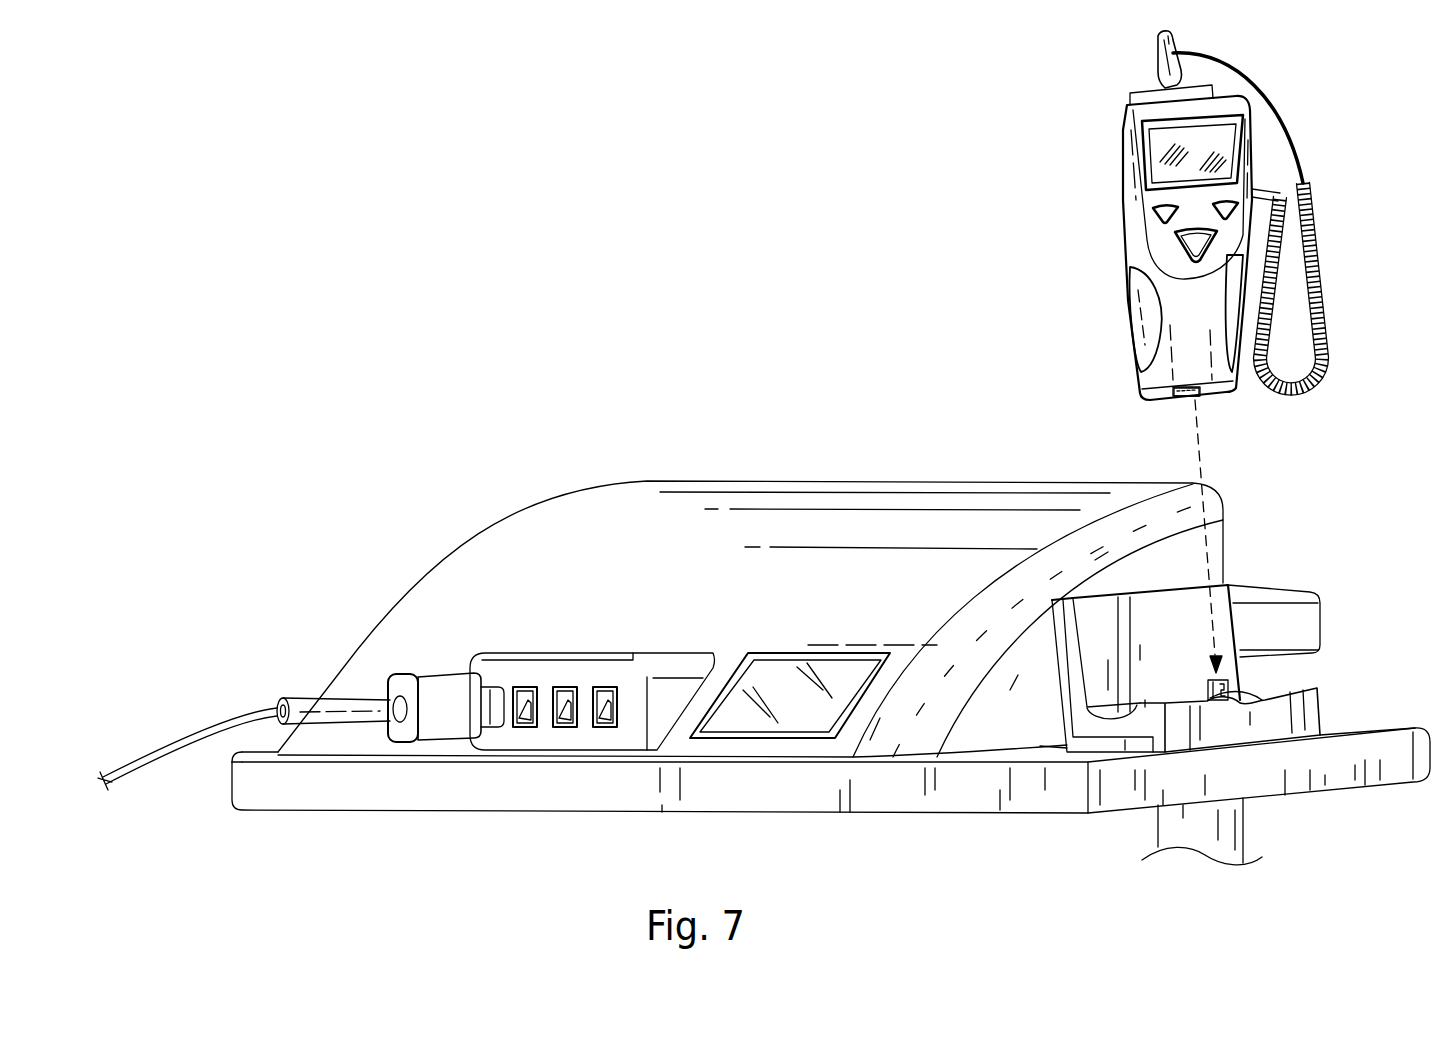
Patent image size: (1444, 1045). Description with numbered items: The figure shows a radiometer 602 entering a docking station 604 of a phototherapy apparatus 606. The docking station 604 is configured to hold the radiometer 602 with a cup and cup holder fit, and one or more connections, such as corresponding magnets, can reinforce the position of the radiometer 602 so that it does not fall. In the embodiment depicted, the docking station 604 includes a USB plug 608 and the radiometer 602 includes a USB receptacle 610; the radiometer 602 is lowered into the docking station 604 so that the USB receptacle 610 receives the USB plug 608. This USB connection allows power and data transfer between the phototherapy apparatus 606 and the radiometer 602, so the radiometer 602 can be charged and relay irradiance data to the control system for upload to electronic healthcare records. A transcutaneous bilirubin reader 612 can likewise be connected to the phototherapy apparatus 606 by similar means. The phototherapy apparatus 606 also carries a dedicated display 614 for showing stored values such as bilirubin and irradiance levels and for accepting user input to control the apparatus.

The radiometer 602 is at (1123, 243).
The docking station 604 is at (1320, 708).
The phototherapy apparatus 606 is at (480, 543).
The USB plug 608 is at (1240, 698).
The USB receptacle 610 is at (1198, 403).
The transcutaneous bilirubin reader 612 is at (193, 730).
The dedicated display 614 is at (777, 675).